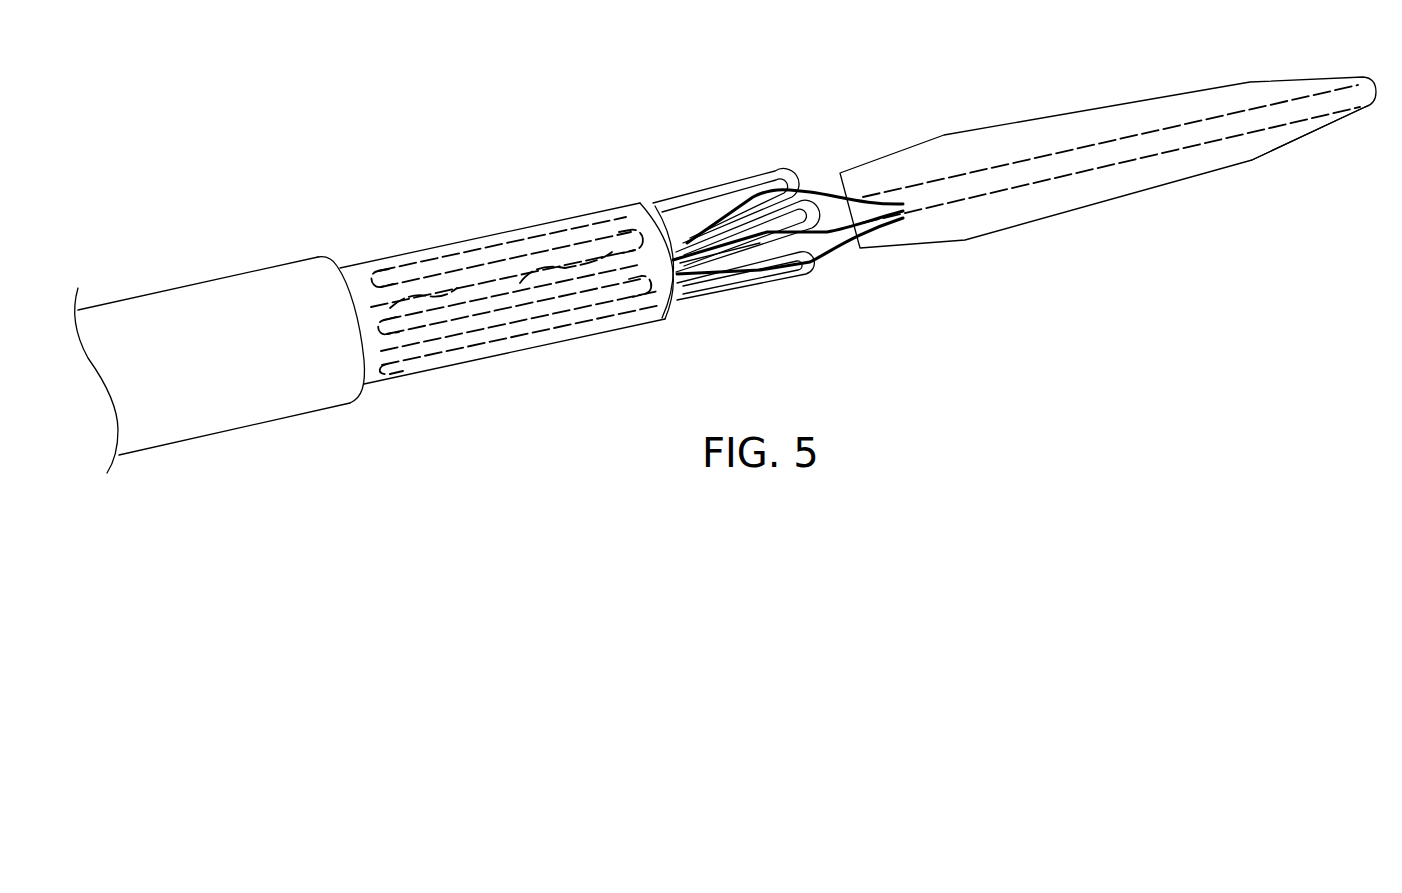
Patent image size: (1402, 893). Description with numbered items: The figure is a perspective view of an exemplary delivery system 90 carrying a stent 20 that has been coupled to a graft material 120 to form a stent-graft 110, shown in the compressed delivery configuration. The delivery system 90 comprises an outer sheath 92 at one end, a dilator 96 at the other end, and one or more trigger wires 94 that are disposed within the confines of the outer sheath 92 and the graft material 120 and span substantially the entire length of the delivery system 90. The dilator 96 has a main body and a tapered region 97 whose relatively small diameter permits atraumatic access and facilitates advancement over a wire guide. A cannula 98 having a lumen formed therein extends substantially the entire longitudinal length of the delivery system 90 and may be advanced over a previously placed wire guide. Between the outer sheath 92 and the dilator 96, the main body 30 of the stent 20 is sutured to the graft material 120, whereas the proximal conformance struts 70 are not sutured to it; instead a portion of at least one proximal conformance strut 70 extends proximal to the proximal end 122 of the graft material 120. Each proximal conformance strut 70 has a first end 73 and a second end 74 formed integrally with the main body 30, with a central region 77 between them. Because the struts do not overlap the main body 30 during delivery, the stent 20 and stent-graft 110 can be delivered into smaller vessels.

The delivery system 90 is at (382, 88).
The stent 20 is at (605, 186).
The main body 30 is at (508, 245).
The stent-graft 110 is at (406, 233).
The graft material 120 is at (513, 340).
The proximal end of the graft material 122 is at (673, 313).
The proximal conformance strut 70 is at (778, 221).
The second end 74 is at (682, 208).
The first end 73 is at (701, 300).
The central region 77 is at (817, 215).
The trigger wire 94 is at (842, 225).
The dilator 96 is at (1108, 176).
The tapered region 97 is at (1303, 137).
The cannula 98 is at (1135, 147).
The outer sheath 92 is at (245, 382).